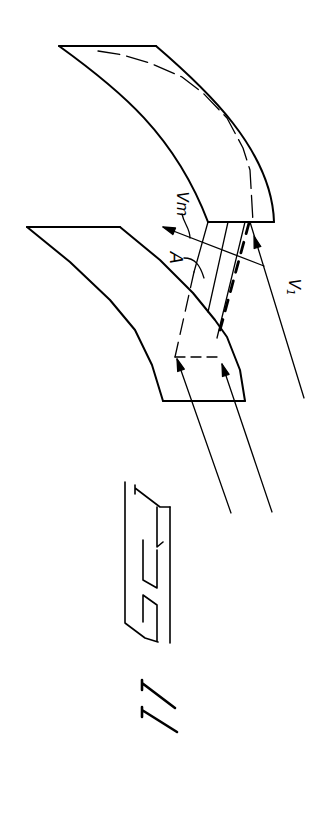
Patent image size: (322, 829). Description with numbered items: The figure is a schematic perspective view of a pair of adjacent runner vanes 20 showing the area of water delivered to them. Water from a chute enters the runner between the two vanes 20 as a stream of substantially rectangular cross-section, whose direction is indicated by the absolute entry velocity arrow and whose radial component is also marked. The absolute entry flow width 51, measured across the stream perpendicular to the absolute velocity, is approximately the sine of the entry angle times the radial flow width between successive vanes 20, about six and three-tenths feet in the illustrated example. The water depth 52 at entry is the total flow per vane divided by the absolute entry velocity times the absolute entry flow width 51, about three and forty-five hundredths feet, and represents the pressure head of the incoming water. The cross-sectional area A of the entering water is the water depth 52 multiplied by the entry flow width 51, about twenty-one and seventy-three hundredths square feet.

The runner vane 20 is at (259, 152).
The absolute entry flow width 51 is at (267, 492).
The water depth at entry 52 is at (262, 482).